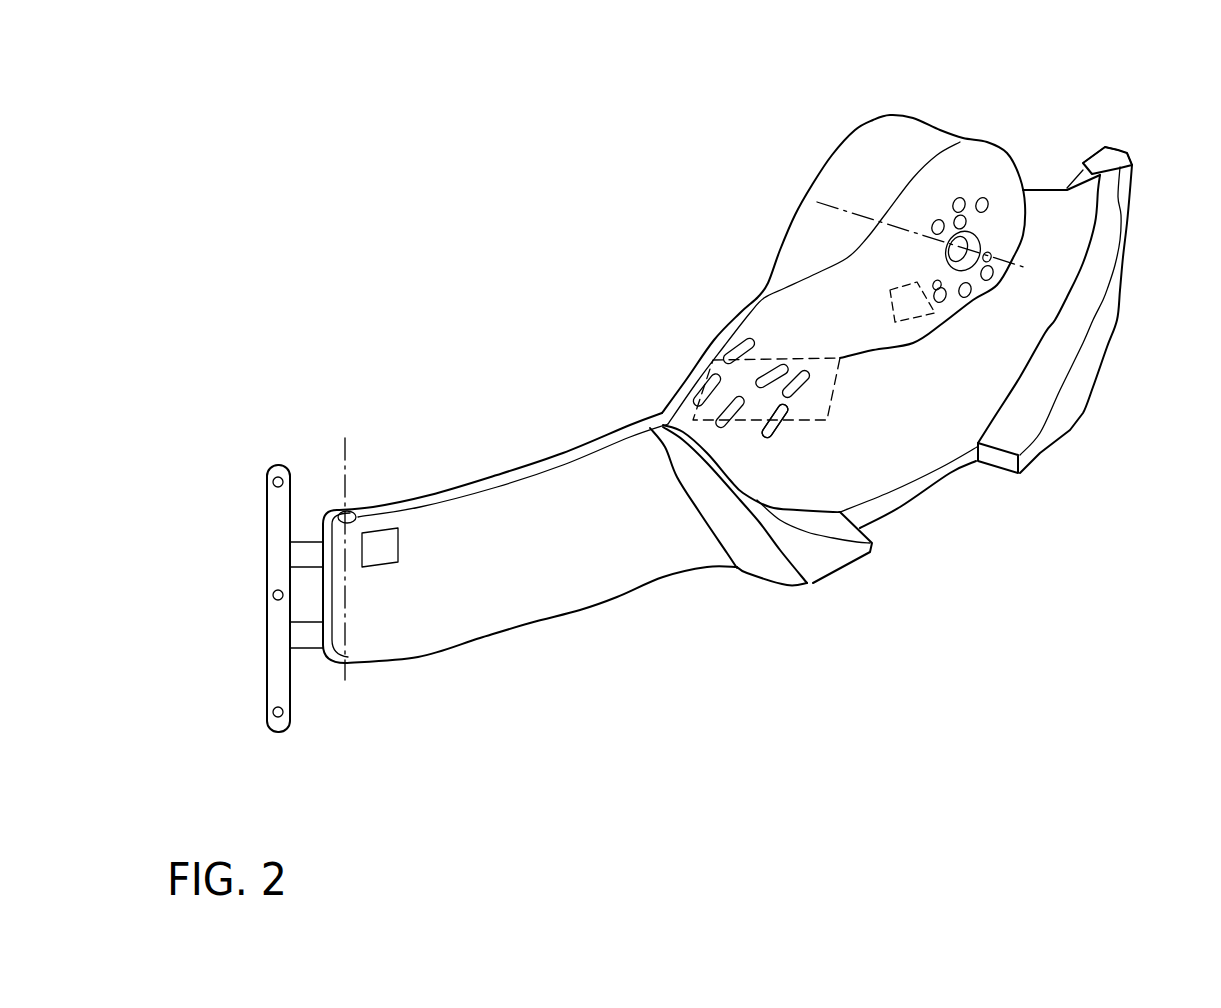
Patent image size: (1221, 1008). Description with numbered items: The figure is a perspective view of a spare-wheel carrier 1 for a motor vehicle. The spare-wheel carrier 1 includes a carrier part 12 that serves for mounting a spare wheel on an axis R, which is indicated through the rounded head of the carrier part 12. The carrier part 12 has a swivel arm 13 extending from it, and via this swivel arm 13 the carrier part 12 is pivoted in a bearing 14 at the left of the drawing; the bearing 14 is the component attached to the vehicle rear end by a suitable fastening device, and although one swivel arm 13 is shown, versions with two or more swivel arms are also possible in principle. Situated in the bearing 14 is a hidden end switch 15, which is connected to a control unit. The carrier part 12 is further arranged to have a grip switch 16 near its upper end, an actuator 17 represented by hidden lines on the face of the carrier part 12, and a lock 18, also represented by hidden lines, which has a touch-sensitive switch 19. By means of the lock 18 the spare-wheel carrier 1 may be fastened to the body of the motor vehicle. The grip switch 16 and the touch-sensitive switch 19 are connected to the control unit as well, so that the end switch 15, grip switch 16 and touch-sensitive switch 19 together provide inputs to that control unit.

The spare-wheel carrier 1 is at (570, 260).
The carrier part 12 is at (928, 435).
The swivel arm 13 is at (566, 579).
The bearing 14 is at (278, 528).
The end switch 15 is at (383, 542).
The grip switch 16 is at (1102, 153).
The actuator 17 is at (902, 295).
The lock 18 is at (786, 455).
The touch-sensitive switch 19 is at (816, 411).
The axis R is at (829, 206).